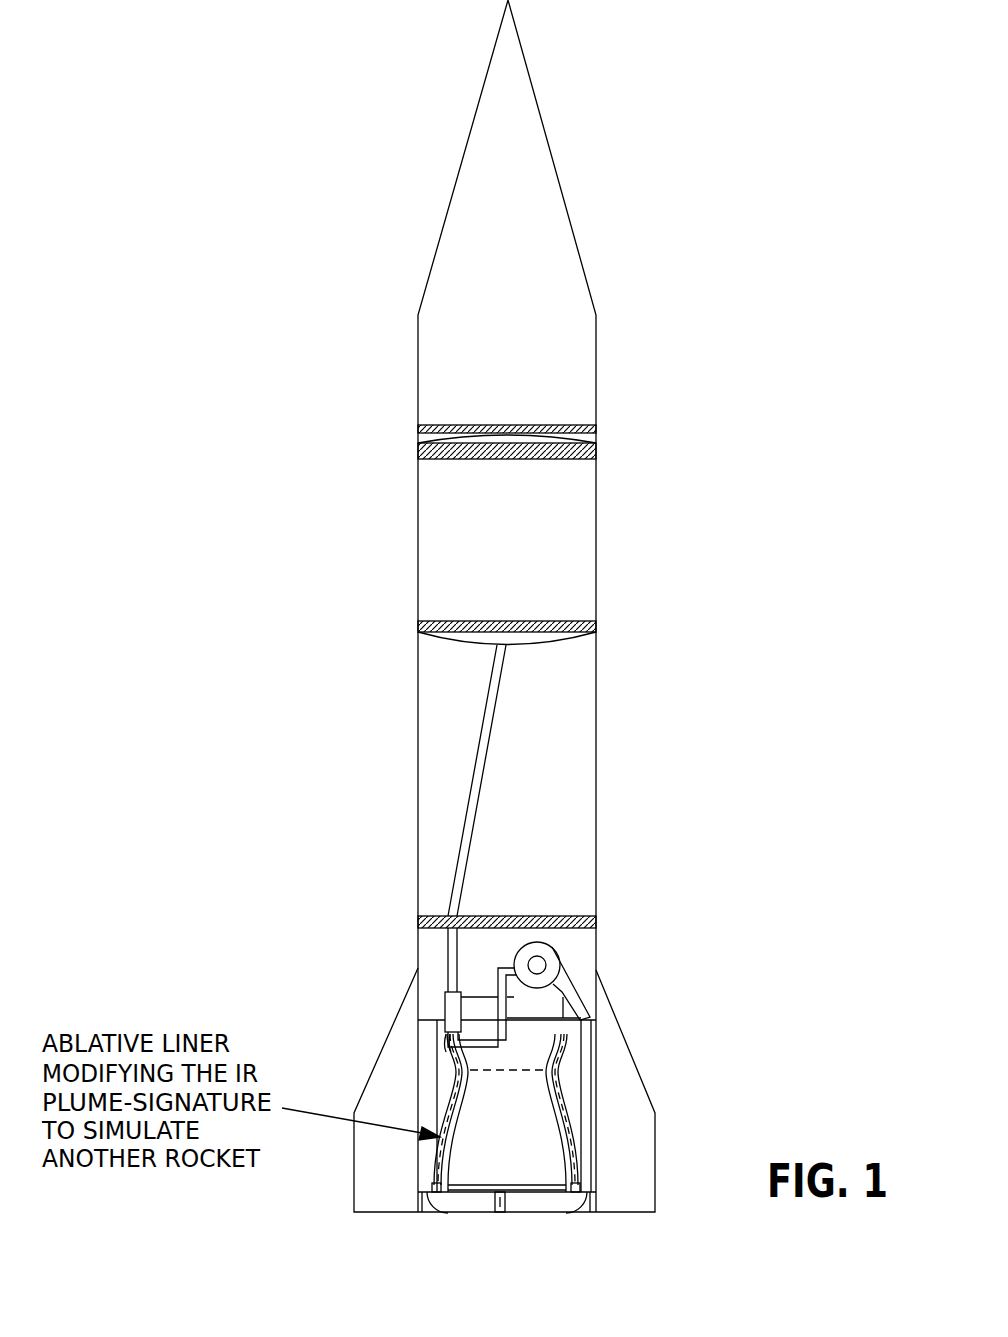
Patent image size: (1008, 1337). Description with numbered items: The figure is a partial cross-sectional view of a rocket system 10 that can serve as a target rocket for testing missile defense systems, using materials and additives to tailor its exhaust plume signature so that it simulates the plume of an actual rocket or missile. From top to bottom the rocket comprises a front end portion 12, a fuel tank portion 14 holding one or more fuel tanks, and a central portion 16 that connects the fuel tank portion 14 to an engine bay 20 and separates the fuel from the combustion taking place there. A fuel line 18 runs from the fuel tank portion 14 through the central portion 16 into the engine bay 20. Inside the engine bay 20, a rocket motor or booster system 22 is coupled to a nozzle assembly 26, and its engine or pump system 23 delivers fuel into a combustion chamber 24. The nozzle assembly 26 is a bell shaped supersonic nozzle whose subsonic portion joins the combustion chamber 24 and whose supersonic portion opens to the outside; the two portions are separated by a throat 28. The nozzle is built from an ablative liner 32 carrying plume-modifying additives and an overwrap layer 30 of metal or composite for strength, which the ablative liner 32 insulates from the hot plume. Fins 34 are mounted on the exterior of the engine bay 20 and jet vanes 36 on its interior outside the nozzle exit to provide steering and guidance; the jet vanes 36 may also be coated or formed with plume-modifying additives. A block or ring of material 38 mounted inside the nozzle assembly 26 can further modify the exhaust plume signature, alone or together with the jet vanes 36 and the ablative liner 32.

The rocket system 10 is at (330, 136).
The front end portion 12 is at (605, 142).
The fuel tank portion 14 is at (633, 513).
The central portion 16 is at (637, 749).
The fuel line 18 is at (518, 776).
The engine bay 20 is at (638, 960).
The rocket motor or booster system 22 is at (416, 958).
The engine or pump system 23 is at (563, 956).
The combustion chamber 24 is at (543, 1016).
The nozzle assembly 26 is at (516, 1124).
The throat 28 is at (480, 1073).
The overwrap layer 30 is at (447, 1103).
The ablative liner 32 is at (450, 1143).
The fins 34 is at (593, 1125).
The jet vanes 36 is at (430, 1232).
The block or ring of material 38 is at (523, 1212).